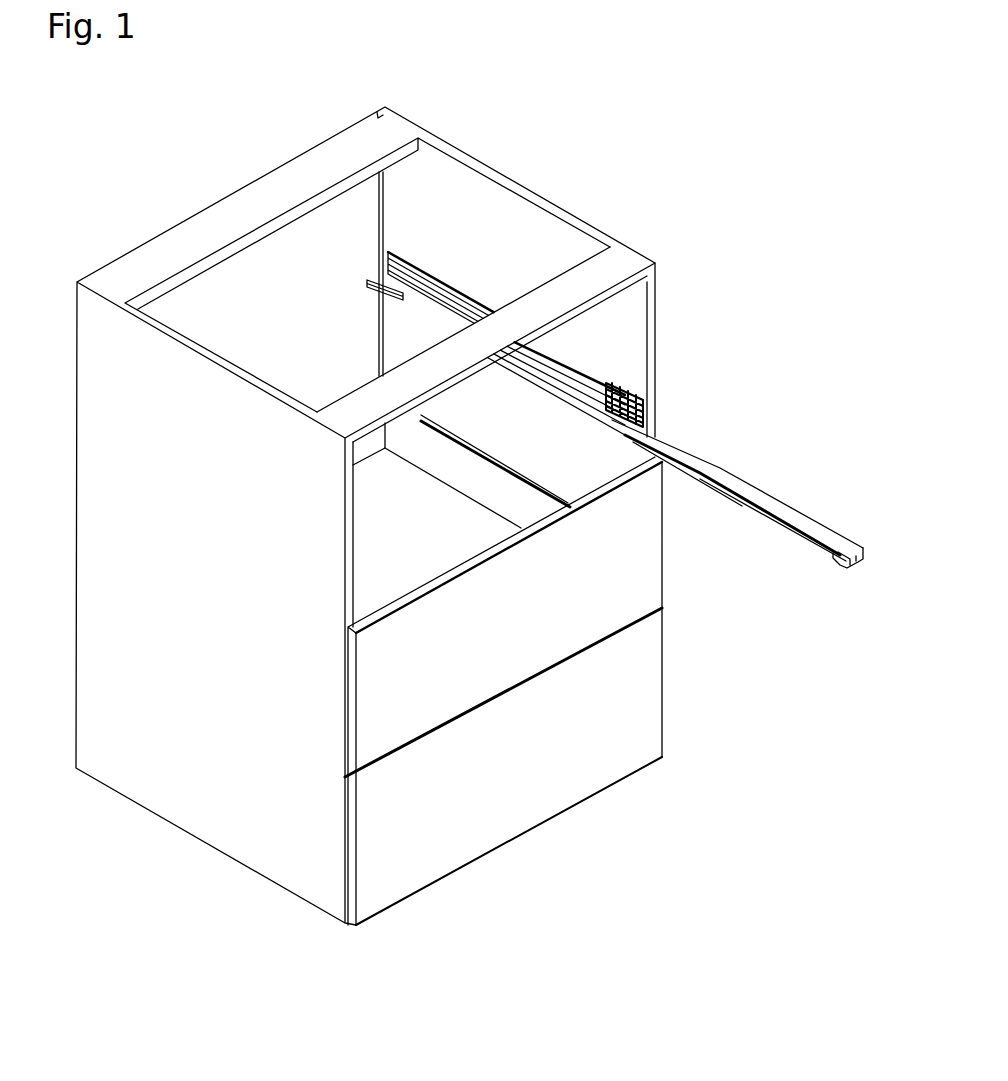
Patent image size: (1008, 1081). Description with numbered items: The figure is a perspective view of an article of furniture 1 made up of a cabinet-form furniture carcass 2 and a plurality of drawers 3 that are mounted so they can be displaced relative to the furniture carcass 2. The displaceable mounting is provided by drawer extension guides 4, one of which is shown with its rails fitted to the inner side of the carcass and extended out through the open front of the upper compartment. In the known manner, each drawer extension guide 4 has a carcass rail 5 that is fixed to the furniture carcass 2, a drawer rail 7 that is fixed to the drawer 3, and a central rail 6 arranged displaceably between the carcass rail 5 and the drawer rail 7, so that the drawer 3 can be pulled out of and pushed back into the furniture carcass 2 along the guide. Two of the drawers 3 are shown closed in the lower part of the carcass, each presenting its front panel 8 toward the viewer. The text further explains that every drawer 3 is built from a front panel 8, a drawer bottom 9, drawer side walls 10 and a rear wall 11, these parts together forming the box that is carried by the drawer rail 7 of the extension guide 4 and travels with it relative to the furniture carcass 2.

The article of furniture 1 is at (149, 871).
The furniture carcass 2 is at (298, 880).
The drawer 3 is at (690, 549).
The drawer extension guide 4 is at (507, 270).
The carcass rail 5 is at (400, 293).
The central rail 6 is at (613, 388).
The drawer rail 7 is at (717, 472).
The front panel 8 is at (645, 570).
The drawer bottom 9 is at (388, 543).
The drawer side wall 10 is at (420, 447).
The rear wall 11 is at (368, 447).